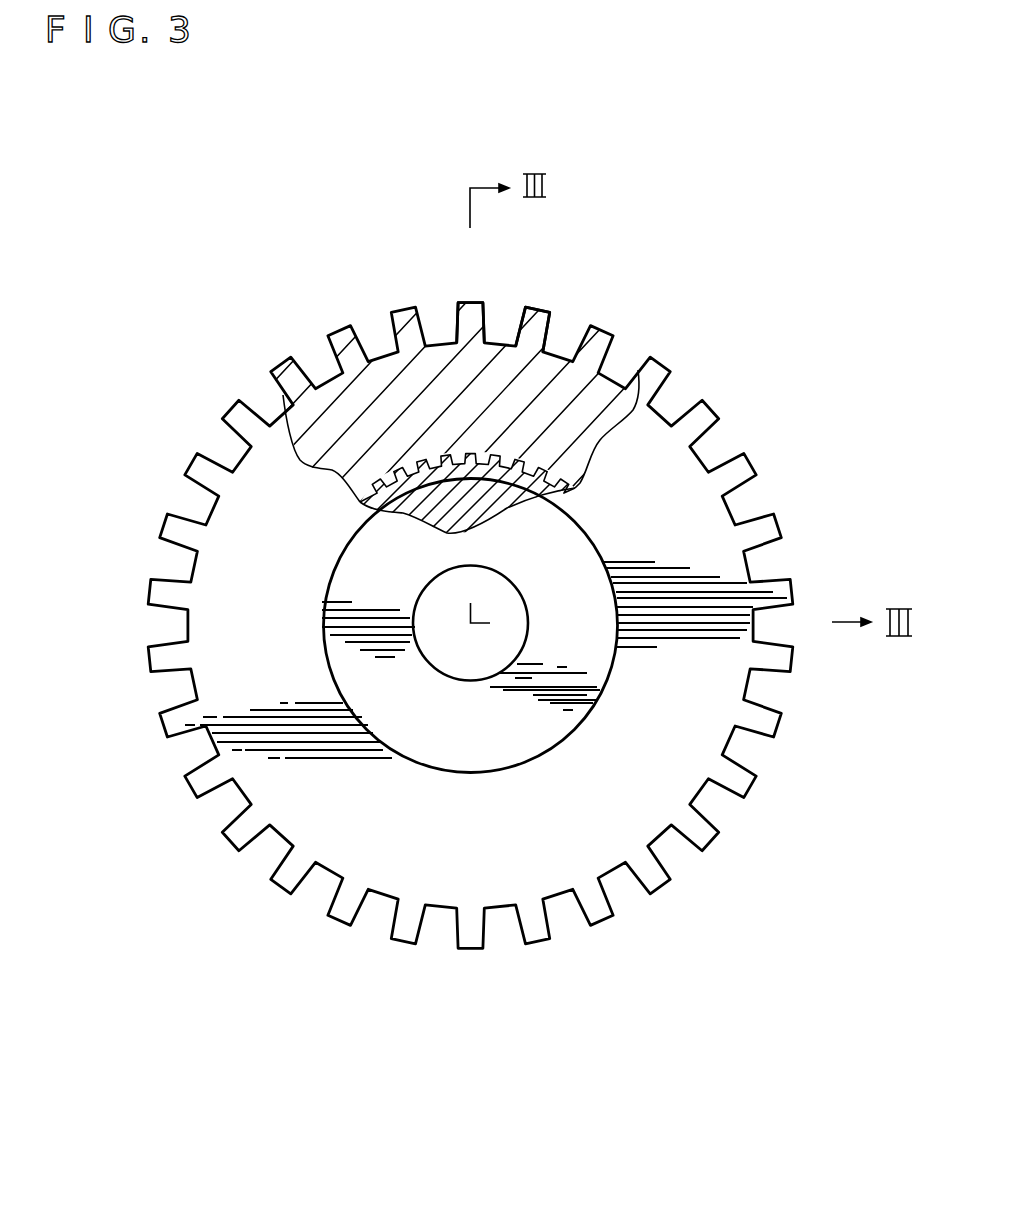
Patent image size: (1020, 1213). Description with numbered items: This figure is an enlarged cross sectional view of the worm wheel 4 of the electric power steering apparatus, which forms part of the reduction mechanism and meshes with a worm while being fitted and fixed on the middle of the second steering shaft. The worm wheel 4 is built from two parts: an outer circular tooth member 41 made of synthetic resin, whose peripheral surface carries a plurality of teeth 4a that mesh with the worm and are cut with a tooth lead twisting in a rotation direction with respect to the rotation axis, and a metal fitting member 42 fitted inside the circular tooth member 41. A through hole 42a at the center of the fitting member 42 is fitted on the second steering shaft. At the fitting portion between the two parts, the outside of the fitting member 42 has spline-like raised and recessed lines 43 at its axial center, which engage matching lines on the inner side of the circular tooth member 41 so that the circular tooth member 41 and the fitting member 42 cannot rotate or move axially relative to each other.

The worm wheel 4 is at (637, 327).
The teeth 4a is at (461, 301).
The circular tooth member 41 is at (499, 341).
The fitting member 42 is at (583, 533).
The through hole 42a is at (451, 679).
The raised and recessed lines 43 is at (413, 462).